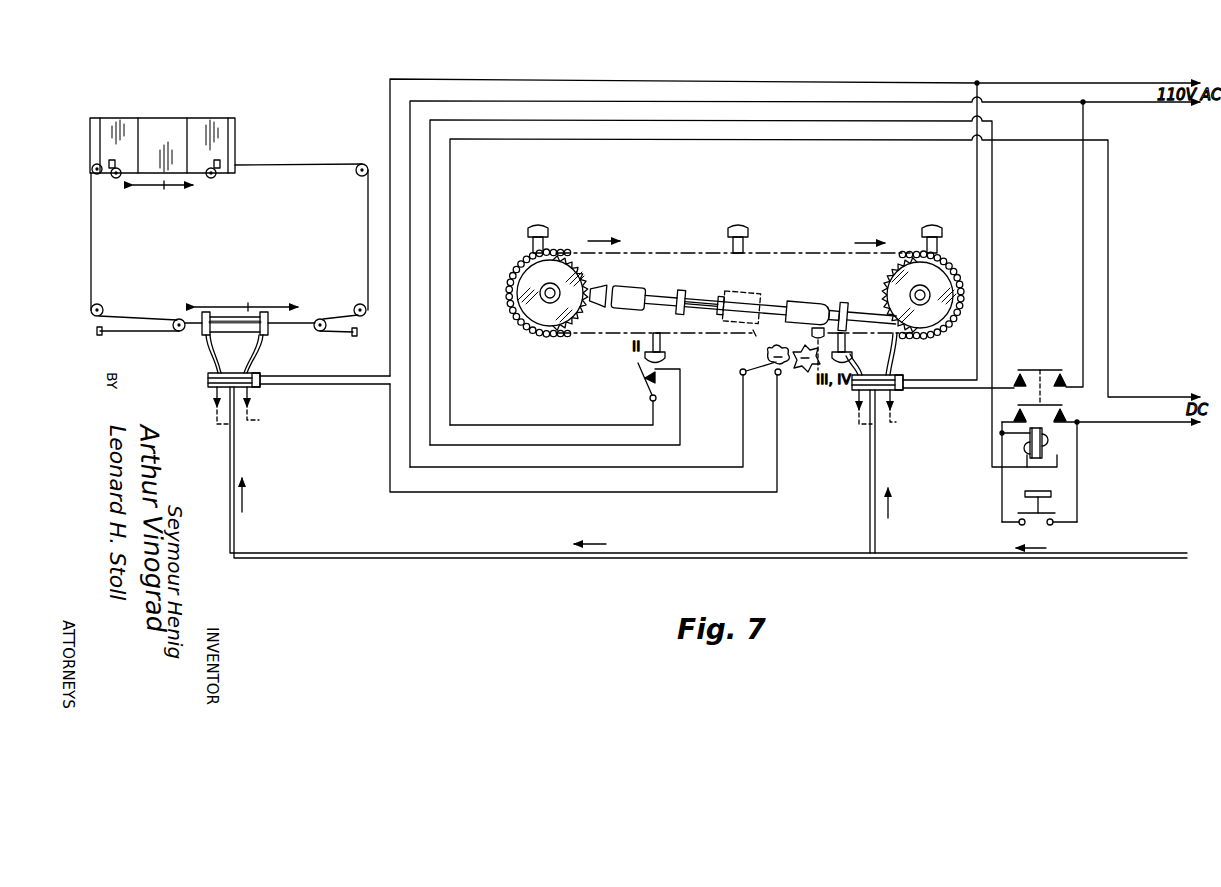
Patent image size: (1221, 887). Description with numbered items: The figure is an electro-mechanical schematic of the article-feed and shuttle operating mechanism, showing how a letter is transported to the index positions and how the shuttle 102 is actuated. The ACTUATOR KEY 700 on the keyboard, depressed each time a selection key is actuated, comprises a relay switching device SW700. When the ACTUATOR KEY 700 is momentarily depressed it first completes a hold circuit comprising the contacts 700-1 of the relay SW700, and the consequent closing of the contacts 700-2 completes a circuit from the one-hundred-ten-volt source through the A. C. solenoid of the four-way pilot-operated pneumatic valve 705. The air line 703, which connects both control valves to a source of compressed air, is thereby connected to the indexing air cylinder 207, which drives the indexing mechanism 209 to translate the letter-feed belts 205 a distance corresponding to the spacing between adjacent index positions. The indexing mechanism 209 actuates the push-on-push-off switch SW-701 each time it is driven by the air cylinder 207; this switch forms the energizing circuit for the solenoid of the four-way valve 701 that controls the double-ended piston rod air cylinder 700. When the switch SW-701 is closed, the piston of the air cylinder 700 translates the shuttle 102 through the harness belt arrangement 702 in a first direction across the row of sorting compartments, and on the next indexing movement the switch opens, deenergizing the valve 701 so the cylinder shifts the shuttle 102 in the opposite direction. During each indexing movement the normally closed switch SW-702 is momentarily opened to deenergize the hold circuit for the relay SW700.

The shuttle 102 is at (145, 90).
The harness belt arrangement 702 is at (91, 262).
The double-ended piston rod air cylinder 700 is at (214, 334).
The four-way pilot-operated A. C. solenoid actuated valve 701 is at (208, 380).
The air line 703 is at (581, 560).
The letter-feed belts 205 is at (567, 254).
The indexing mechanism 209 is at (632, 293).
The air cylinder 207 is at (868, 318).
The normally closed switch SW-702 is at (650, 400).
The push-on-push-off switch SW-701 is at (786, 356).
The four-way pilot-operated A. C. solenoid pneumatic valve 705 is at (904, 385).
The contacts 700-2 is at (1066, 376).
The contacts 700-1 is at (1067, 412).
The relay switching device SW700 is at (1057, 461).
The actuator key ACTUATOR KEY 700 is at (1049, 491).